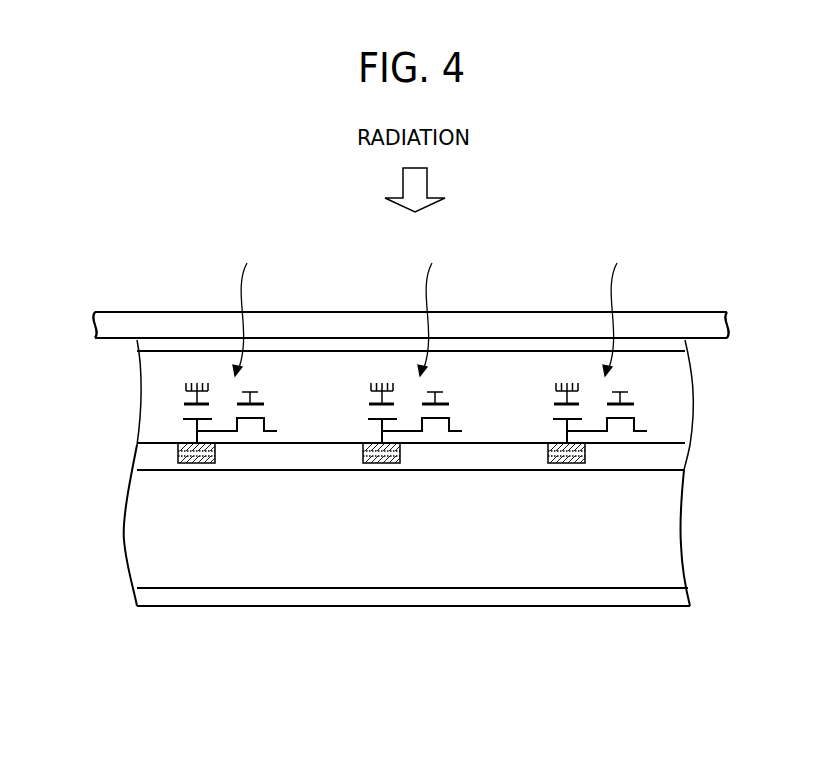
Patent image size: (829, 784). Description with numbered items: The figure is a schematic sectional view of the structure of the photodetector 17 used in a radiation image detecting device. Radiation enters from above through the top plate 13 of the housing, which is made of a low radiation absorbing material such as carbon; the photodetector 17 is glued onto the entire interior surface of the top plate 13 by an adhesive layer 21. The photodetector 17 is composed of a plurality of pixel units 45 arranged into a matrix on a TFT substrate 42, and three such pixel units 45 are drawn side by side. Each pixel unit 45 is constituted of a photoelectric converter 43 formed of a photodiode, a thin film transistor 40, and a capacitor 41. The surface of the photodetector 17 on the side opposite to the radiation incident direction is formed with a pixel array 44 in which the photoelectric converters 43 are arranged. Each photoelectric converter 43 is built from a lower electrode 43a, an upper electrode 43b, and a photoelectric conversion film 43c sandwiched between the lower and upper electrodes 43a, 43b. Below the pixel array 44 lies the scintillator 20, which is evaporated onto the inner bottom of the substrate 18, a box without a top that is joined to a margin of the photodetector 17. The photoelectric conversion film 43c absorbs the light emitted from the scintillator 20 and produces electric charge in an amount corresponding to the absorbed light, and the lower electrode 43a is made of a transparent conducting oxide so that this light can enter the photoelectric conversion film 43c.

The top plate 13 is at (702, 320).
The adhesive layer 21 is at (512, 347).
The TFT substrate 42 is at (140, 373).
The photodetector 17 is at (708, 348).
The pixel array 44 is at (139, 452).
The scintillator 20 is at (124, 536).
The substrate 18 is at (400, 597).
The capacitor 41 is at (184, 396).
The thin film transistor 40 is at (259, 393).
The pixel unit 45 is at (429, 308).
The photoelectric converter 43 is at (287, 482).
The upper electrode 43b is at (215, 447).
The photoelectric conversion film 43c is at (215, 452).
The lower electrode 43a is at (215, 457).